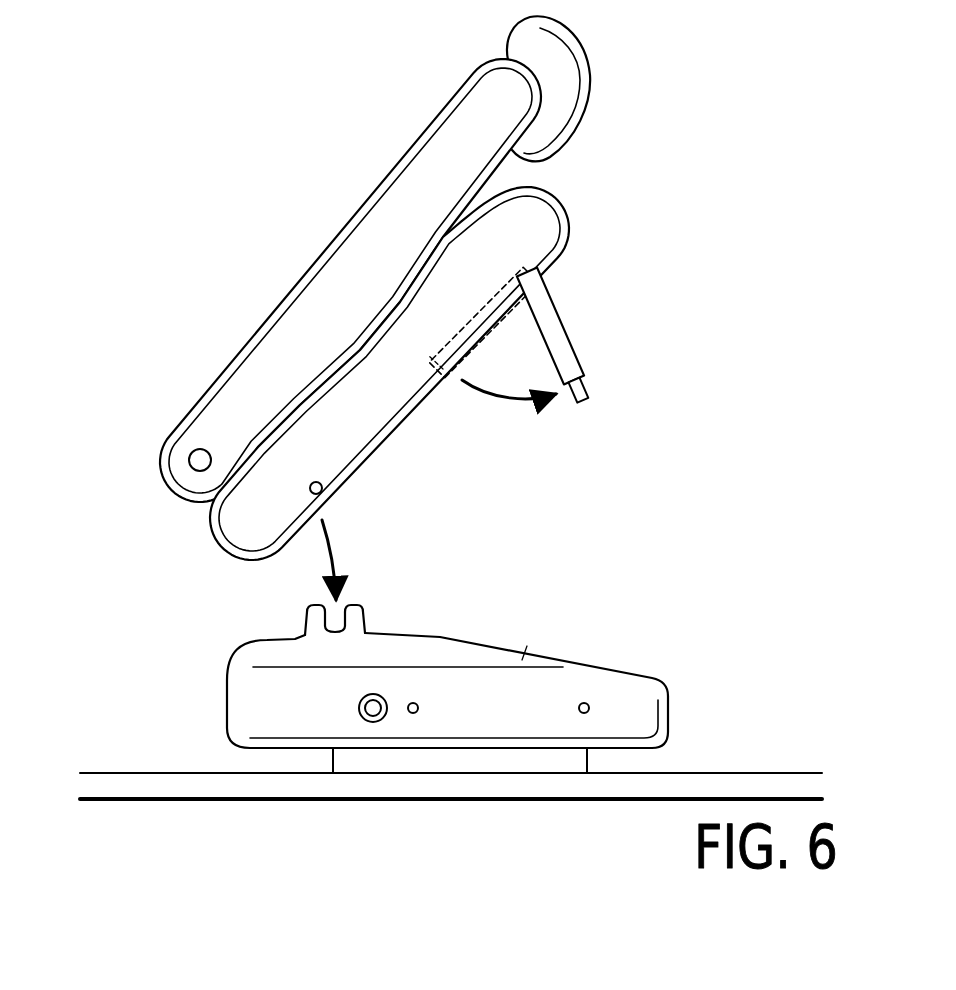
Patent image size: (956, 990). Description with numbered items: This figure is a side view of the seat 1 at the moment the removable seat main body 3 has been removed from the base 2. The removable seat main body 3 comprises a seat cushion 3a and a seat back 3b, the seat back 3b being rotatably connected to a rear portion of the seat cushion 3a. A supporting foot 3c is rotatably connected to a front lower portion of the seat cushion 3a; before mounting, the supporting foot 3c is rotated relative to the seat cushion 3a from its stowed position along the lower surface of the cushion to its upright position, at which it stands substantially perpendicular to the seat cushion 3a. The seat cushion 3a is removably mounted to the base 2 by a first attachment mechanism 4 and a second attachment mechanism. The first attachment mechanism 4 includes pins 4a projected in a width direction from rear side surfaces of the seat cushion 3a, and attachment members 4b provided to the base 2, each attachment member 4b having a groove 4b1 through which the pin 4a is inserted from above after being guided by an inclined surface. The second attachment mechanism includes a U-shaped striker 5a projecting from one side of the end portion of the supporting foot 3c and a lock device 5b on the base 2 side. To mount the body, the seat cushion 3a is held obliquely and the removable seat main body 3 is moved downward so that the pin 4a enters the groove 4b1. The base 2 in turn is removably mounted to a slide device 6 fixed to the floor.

The seat 1 is at (183, 130).
The base 2 is at (678, 688).
The removable seat main body 3 is at (403, 146).
The seat cushion 3a is at (357, 410).
The seat back 3b is at (317, 293).
The supporting foot 3c is at (520, 322).
The first attachment mechanism 4 is at (305, 553).
The pin 4a is at (324, 490).
The attachment member 4b is at (309, 625).
The groove 4b1 is at (352, 606).
The striker 5a is at (585, 403).
The lock device 5b is at (537, 642).
The slide device 6 is at (111, 766).